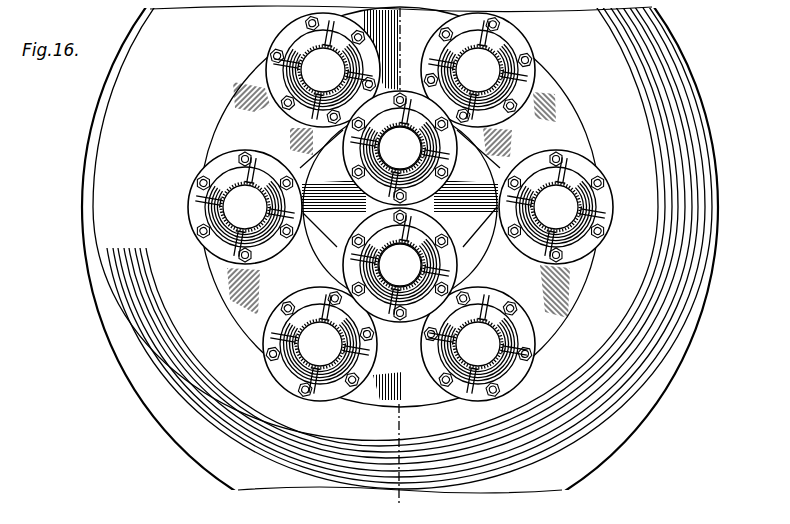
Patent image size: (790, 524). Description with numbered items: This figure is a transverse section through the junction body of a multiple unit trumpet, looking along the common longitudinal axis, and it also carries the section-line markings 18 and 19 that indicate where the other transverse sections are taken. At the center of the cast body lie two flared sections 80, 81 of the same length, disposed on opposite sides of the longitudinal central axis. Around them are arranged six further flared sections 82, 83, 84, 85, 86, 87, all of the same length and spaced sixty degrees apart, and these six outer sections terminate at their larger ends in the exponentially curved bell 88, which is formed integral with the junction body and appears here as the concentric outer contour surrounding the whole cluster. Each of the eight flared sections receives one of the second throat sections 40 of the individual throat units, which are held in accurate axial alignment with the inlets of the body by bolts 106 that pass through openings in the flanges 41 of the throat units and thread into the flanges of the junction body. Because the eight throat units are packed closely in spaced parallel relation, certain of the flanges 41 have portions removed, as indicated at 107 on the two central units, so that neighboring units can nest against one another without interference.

The section line 18- 18 is at (378, 25).
The section line 19- 19 is at (170, 207).
The second throat section 40 is at (302, 42).
The flange 41 is at (270, 78).
The flared section 80 is at (510, 150).
The flared section 81 is at (266, 256).
The flared section 82 is at (562, 96).
The flared section 83 is at (572, 136).
The flared section 84 is at (414, 390).
The flared section 85 is at (388, 388).
The flared section 86 is at (232, 122).
The flared section 87 is at (248, 90).
The exponentially curved bell 88 is at (698, 130).
The bolt 106 is at (270, 53).
The removed flange portion 107 is at (400, 206).